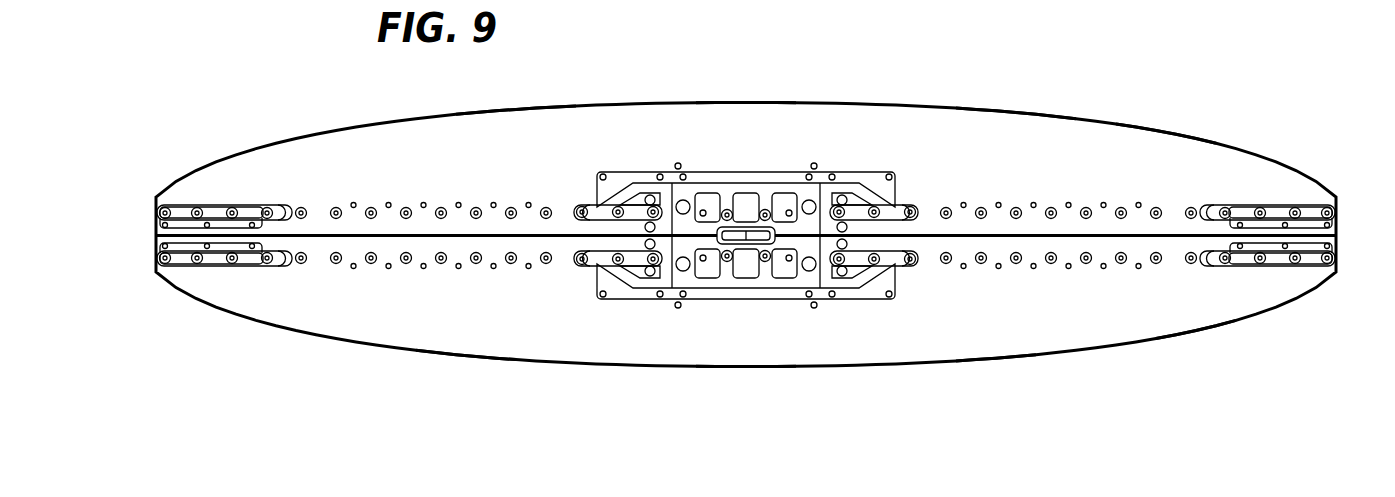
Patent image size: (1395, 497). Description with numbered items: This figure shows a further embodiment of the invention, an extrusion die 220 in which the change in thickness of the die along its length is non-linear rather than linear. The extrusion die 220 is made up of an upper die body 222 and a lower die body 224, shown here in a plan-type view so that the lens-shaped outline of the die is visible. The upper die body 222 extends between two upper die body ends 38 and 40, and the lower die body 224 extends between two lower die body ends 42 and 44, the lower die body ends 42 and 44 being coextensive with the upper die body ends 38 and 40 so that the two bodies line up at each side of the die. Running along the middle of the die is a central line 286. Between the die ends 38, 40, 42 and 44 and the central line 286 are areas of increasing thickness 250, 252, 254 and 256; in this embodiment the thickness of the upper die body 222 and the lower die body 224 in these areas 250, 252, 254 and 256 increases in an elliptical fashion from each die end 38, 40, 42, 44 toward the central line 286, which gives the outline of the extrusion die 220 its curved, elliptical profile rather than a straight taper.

The extrusion die 220 is at (1103, 355).
The upper die body 222 is at (1160, 130).
The lower die body 224 is at (1196, 320).
The area of increasing thickness 250 is at (1015, 110).
The area of increasing thickness 252 is at (516, 108).
The area of increasing thickness 254 is at (997, 361).
The area of increasing thickness 256 is at (470, 357).
The central line 286 is at (738, 102).
The upper die body end 38 is at (1338, 218).
The upper die body end 40 is at (155, 212).
The lower die body end 42 is at (1337, 253).
The lower die body end 44 is at (157, 256).